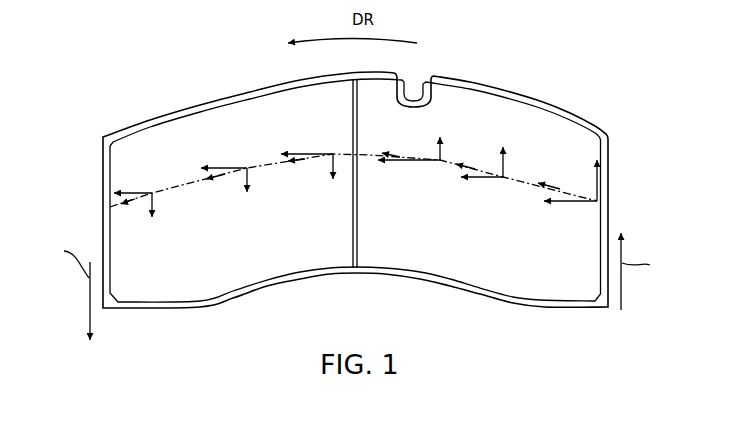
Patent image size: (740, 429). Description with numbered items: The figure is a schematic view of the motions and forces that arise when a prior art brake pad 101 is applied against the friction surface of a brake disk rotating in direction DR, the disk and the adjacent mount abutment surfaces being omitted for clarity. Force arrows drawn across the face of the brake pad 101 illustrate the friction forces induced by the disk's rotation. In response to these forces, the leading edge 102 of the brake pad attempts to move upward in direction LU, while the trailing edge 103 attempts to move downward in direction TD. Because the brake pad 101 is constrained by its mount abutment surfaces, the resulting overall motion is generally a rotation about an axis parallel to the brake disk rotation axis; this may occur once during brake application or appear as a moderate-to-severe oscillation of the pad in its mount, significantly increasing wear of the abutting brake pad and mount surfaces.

The brake pad 101 is at (125, 128).
The leading edge 102 is at (614, 310).
The trailing edge 103 is at (82, 301).